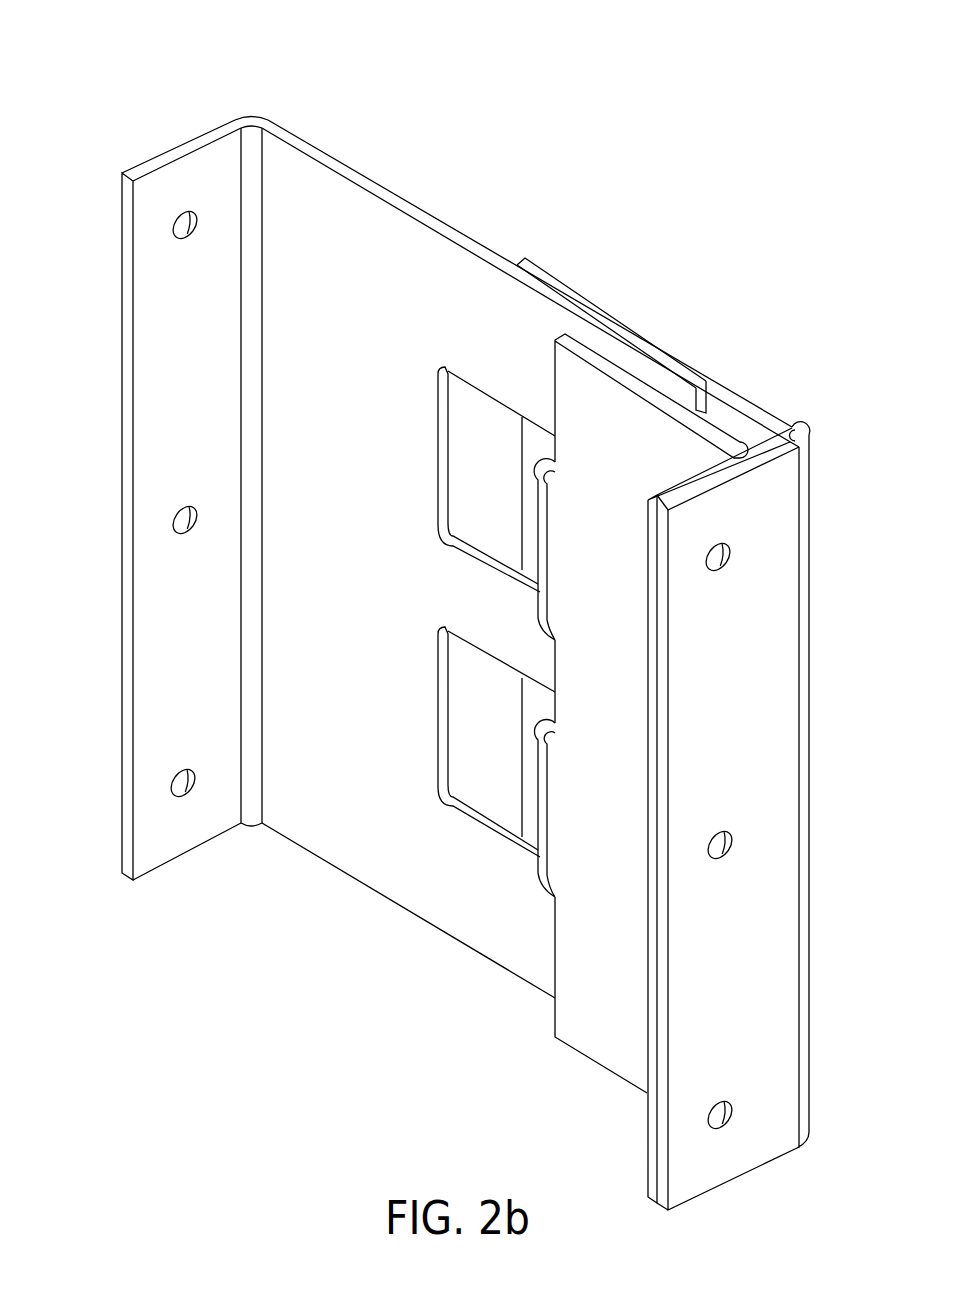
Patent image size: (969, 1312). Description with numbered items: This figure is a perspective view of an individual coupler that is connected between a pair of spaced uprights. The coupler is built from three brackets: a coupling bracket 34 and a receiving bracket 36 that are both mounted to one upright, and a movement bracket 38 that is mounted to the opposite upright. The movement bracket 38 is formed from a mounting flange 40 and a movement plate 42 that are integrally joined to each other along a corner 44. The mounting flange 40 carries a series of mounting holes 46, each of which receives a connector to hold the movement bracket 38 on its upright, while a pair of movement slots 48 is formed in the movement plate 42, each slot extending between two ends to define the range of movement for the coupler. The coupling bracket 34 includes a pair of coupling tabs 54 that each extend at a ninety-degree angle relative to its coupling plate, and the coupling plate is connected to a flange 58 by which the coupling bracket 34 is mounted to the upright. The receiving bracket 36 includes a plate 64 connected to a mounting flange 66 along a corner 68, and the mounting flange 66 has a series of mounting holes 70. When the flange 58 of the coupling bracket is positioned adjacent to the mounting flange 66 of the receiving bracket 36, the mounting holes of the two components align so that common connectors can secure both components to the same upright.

The coupling bracket 34 is at (600, 1035).
The receiving bracket 36 is at (743, 393).
The movement bracket 38 is at (340, 840).
The mounting flange 40 is at (155, 385).
The movement plate 42 is at (326, 157).
The corner 44 is at (247, 120).
The mounting holes 46 is at (180, 513).
The movement slots 48 is at (440, 455).
The coupling tabs 54 is at (537, 540).
The flange 58 is at (692, 483).
The plate 64 is at (728, 405).
The mounting flange 66 is at (763, 460).
The corner 68 is at (802, 433).
The mounting holes 70 is at (722, 557).